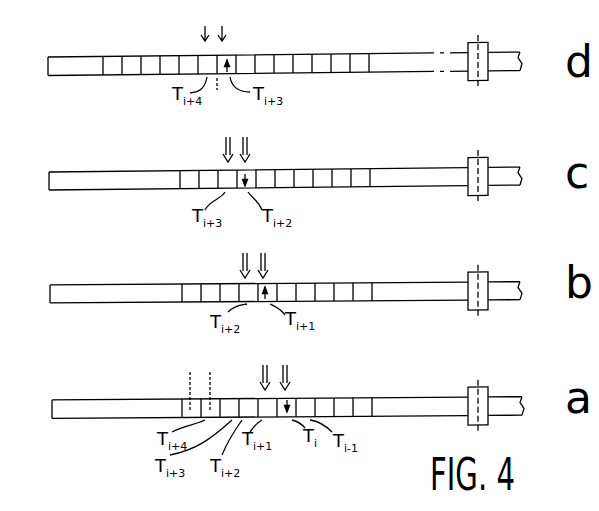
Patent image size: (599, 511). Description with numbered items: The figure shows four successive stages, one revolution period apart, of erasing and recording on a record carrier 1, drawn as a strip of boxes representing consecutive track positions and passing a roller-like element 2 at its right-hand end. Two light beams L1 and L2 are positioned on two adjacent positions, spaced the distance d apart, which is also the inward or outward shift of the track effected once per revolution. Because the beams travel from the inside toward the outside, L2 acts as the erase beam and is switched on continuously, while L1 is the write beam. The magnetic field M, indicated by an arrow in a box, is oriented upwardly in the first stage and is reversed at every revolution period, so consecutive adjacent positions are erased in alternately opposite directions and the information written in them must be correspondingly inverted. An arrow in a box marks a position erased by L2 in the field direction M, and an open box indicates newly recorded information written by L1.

The record carrier 1 is at (58, 67).
The transport roller / guide 2 is at (478, 84).
The write beam L1 is at (298, 362).
The erase beam L2 is at (262, 363).
The magnetic field M is at (286, 440).
The distance d is at (227, 378).